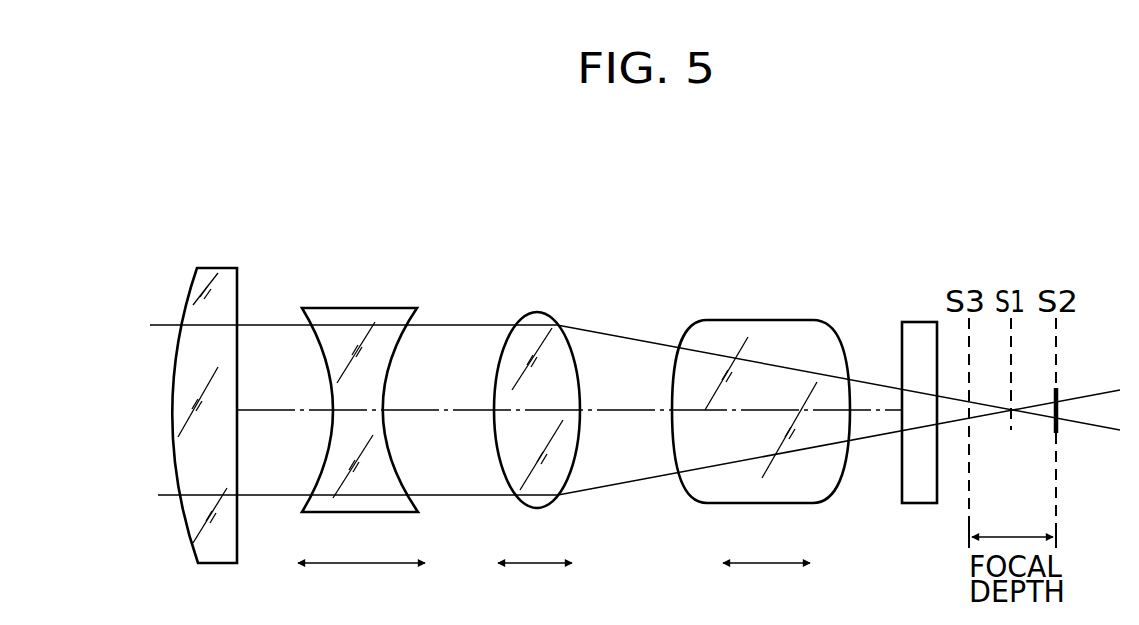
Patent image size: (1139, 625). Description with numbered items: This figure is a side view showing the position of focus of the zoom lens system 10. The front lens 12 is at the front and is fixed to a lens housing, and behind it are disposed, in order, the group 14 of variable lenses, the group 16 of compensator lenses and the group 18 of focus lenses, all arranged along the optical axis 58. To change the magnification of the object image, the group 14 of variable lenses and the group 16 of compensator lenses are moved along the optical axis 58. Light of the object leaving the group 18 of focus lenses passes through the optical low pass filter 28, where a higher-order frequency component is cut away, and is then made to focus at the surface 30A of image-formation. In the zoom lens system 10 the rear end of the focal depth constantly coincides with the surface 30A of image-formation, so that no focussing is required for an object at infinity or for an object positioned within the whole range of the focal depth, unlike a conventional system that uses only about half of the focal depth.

The zoom lens system 10 is at (668, 252).
The front lens 12 is at (212, 268).
The group of variable lenses 14 is at (362, 308).
The group of compensator lenses 16 is at (537, 312).
The group of focus lenses 18 is at (758, 320).
The optical low pass filter 28 is at (917, 322).
The optical axis 58 is at (266, 408).
The surface of image-formation 30A is at (1052, 412).